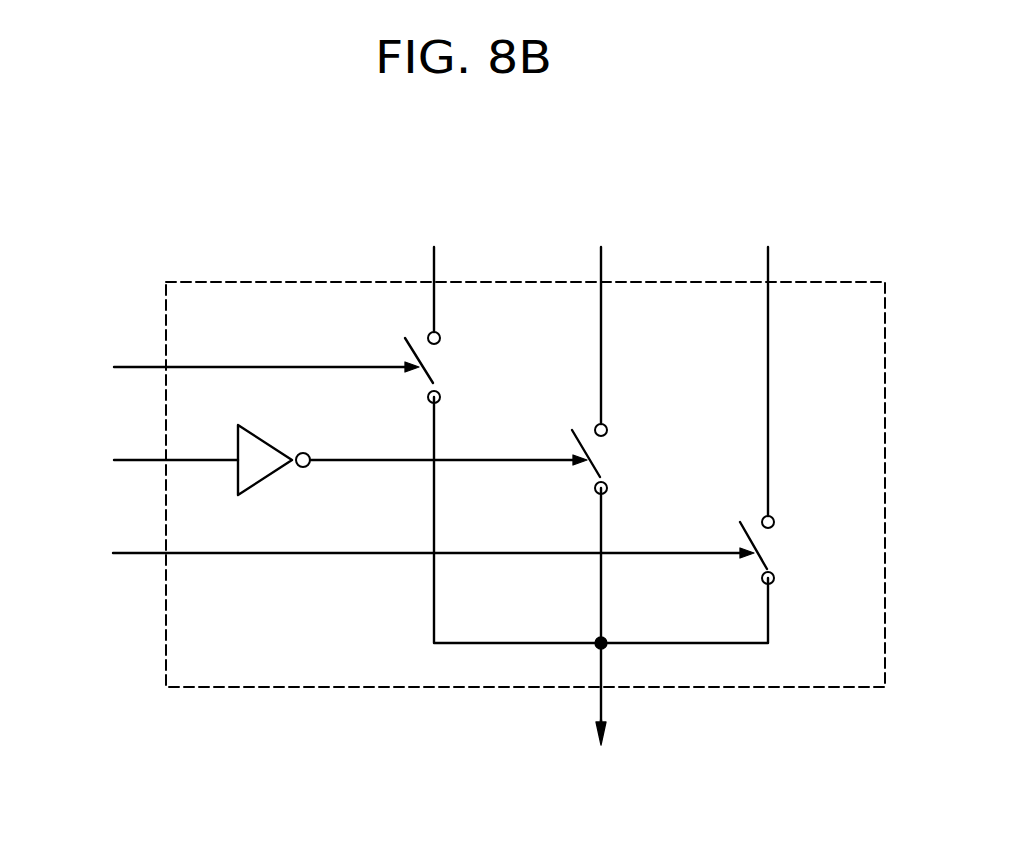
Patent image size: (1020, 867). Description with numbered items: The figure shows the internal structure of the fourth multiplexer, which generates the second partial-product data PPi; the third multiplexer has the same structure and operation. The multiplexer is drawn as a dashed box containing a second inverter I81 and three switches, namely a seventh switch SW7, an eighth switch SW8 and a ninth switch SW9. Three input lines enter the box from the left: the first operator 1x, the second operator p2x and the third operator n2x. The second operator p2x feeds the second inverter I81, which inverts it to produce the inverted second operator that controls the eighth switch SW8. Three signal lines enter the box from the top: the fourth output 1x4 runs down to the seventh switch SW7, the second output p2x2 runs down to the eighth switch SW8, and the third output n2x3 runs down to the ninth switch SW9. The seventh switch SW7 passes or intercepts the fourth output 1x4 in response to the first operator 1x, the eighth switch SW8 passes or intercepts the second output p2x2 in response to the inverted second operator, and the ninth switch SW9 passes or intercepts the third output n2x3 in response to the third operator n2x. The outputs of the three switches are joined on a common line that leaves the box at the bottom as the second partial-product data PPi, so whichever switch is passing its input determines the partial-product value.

The seventh switch SW7 is at (461, 367).
The eighth switch SW8 is at (628, 459).
The ninth switch SW9 is at (795, 550).
The second inverter I81 is at (263, 482).
The first operator 1x is at (244, 367).
The second operator p2x is at (146, 458).
The third operator n2x is at (404, 552).
The fourth output 1x4 is at (437, 271).
The second output p2x2 is at (601, 316).
The third output n2x3 is at (776, 362).
The second partial-product data PPi is at (597, 753).